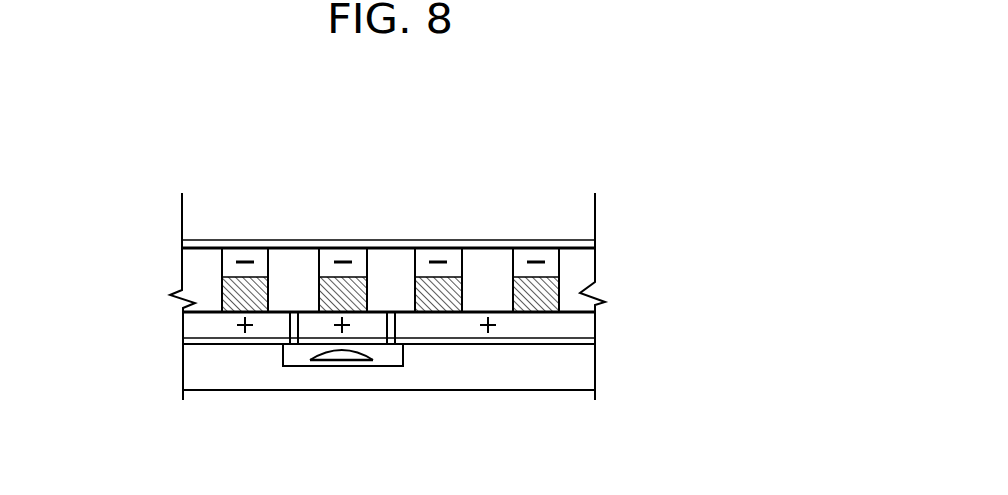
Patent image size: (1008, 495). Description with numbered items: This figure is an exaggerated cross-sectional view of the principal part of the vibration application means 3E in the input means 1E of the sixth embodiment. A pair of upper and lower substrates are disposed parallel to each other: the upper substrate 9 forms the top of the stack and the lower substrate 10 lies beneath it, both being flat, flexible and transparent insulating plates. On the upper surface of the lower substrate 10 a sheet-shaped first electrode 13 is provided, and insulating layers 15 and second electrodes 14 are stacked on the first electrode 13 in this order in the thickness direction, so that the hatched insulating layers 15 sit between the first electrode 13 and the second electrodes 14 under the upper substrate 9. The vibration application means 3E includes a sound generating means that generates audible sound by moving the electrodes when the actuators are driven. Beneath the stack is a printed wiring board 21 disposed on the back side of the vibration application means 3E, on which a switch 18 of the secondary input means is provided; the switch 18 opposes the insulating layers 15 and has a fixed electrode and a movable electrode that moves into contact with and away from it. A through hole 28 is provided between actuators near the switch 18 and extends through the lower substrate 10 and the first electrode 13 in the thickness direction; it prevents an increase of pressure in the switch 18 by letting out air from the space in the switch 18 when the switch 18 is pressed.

The input means 1E is at (302, 213).
The vibration application means 3E is at (485, 242).
The upper substrate 9 is at (577, 242).
The second electrode 14 is at (553, 267).
The insulating layer 15 is at (558, 287).
The first electrode 13 is at (577, 325).
The lower substrate 10 is at (575, 343).
The printed wiring board 21 is at (255, 375).
The switch 18 is at (343, 368).
The through hole 28 is at (295, 328).